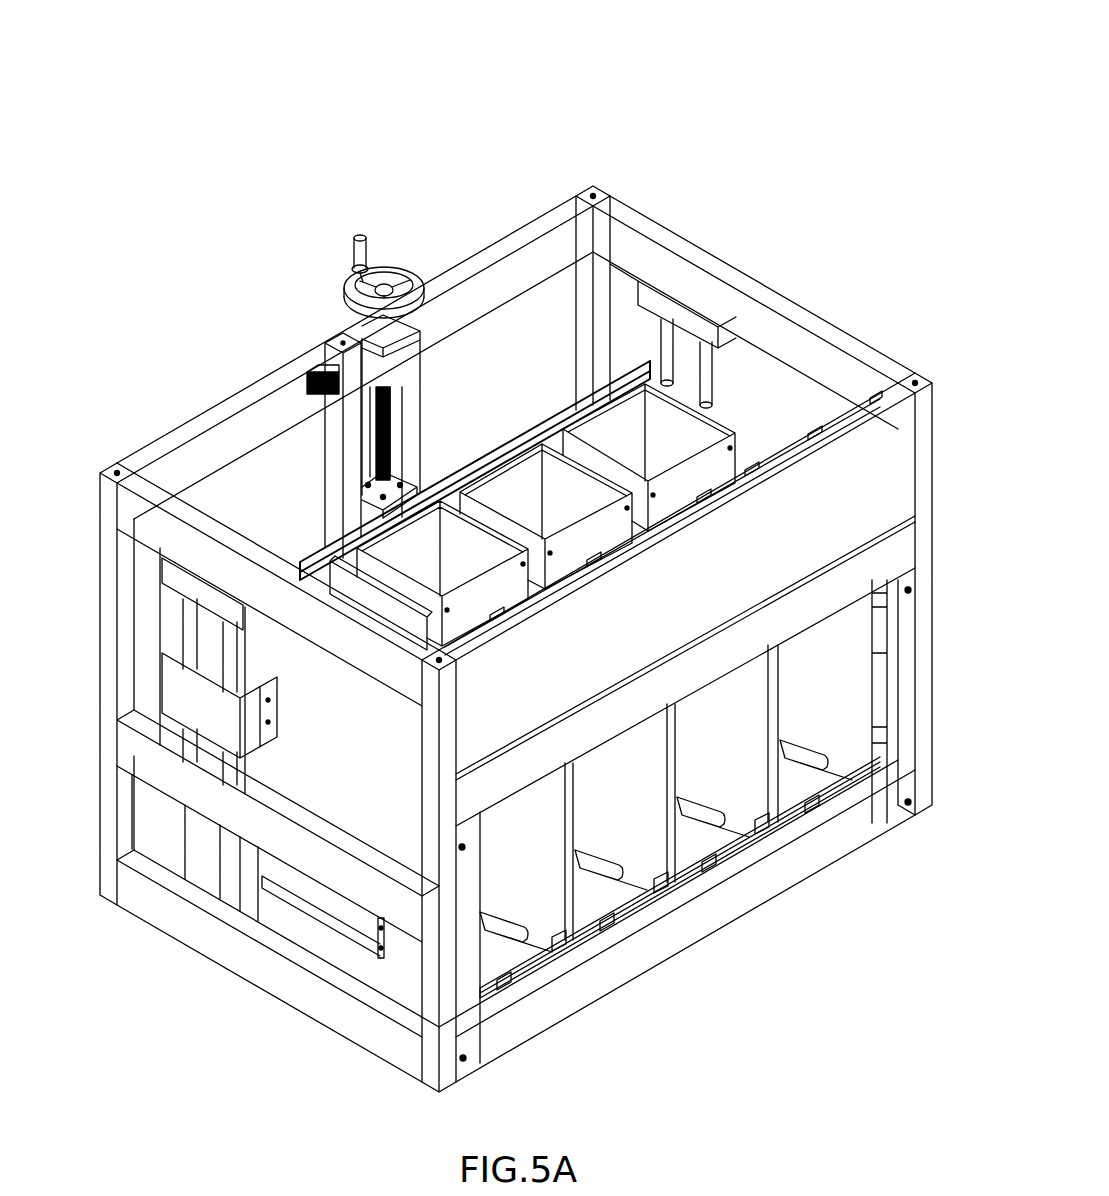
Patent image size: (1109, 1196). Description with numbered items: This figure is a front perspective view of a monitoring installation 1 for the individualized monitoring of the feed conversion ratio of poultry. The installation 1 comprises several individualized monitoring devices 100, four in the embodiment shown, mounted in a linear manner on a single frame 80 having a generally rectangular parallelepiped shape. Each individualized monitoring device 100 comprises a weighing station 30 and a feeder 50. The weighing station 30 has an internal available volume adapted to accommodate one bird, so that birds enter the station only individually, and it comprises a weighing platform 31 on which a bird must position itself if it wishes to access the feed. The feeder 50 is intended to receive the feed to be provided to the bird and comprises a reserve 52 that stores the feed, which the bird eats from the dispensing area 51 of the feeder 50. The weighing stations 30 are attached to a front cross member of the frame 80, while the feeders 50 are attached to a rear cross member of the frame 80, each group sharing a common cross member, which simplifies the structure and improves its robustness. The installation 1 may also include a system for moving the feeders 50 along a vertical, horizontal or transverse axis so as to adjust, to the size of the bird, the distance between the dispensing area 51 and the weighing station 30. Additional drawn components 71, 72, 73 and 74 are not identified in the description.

The monitoring installation 1 is at (692, 124).
The frame 80 is at (143, 440).
The handwheel adjustment mechanism 74 is at (384, 280).
The guide rail 73 is at (545, 422).
The individualized monitoring device 100 is at (737, 368).
The reserve 52 is at (670, 442).
The guide rods 71 is at (183, 607).
The slider block 72 is at (172, 680).
The feeder 50 is at (290, 885).
The dispensing area 51 is at (357, 933).
The weighing station 30 is at (548, 975).
The weighing platform 31 is at (600, 900).